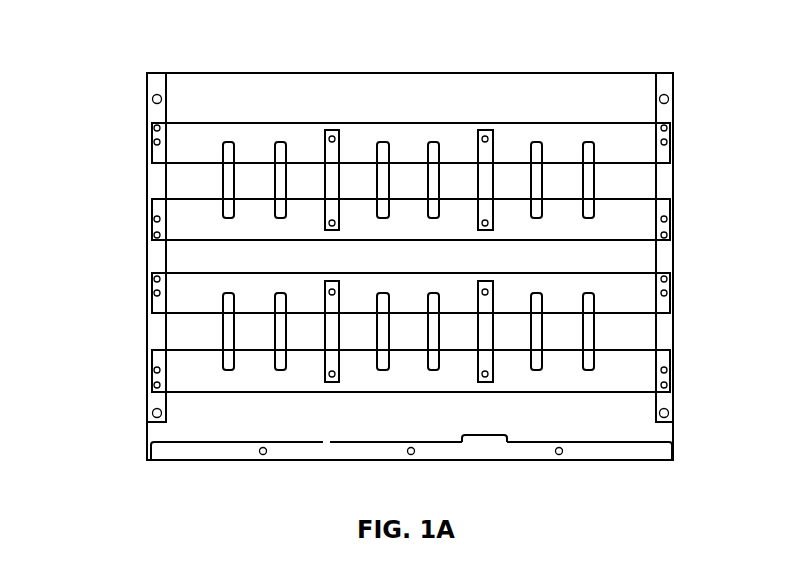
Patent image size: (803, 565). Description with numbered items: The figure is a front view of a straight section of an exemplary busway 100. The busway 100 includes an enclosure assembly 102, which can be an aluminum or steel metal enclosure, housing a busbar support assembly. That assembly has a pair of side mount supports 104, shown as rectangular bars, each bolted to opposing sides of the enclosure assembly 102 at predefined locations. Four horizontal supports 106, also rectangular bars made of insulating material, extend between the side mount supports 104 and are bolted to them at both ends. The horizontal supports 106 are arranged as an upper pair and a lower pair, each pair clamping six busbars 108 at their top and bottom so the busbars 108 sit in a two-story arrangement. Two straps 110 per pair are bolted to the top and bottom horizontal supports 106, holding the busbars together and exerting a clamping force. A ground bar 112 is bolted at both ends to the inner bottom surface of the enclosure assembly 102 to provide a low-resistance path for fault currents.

The busway 100 is at (110, 36).
The enclosure assembly 102 is at (148, 453).
The side mount supports 104 is at (157, 93).
The horizontal supports 106 is at (555, 122).
The busbars 108 is at (215, 192).
The straps 110 is at (332, 332).
The ground bar 112 is at (483, 442).